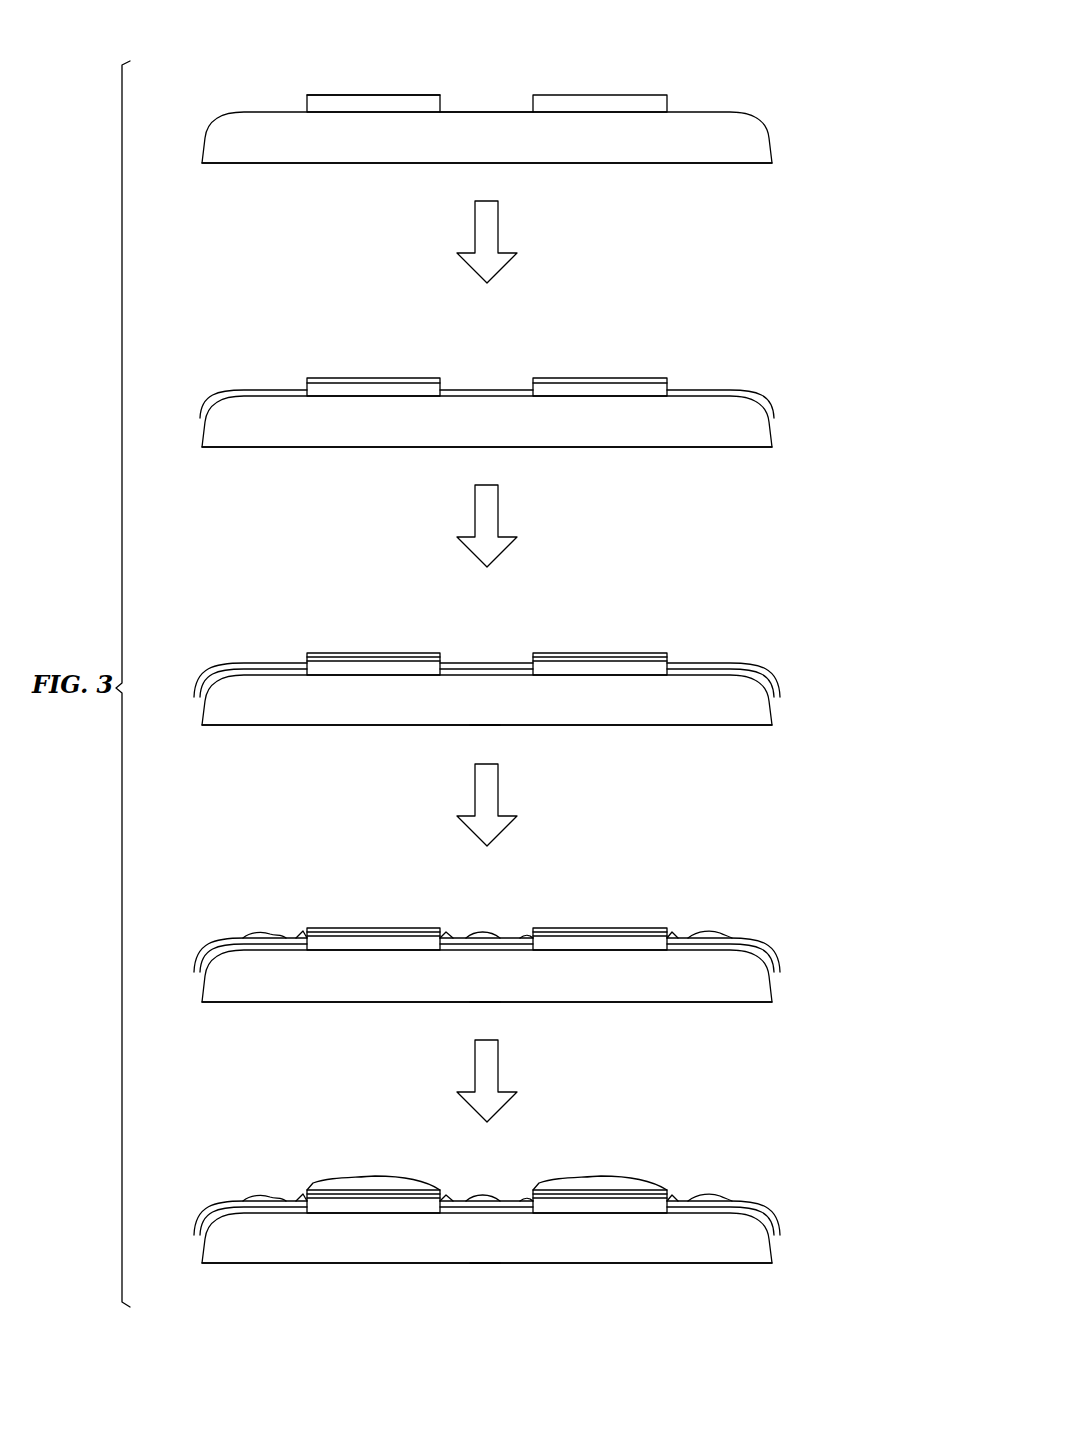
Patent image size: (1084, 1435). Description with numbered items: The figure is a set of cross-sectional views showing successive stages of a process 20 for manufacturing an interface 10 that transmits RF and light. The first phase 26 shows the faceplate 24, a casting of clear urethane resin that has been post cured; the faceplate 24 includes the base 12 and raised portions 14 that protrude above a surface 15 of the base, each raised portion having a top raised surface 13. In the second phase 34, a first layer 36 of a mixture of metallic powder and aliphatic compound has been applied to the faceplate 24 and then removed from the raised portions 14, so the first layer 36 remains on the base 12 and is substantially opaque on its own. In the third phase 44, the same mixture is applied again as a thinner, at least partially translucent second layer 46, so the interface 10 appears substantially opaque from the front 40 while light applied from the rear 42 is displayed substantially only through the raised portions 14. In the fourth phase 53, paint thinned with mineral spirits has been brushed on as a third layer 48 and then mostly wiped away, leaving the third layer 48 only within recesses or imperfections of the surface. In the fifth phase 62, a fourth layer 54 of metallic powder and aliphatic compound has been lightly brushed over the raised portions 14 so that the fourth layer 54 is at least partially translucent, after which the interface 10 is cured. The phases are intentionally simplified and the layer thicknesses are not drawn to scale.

The interface 10 is at (766, 82).
The base 12 is at (246, 145).
The top raised surface 13 is at (386, 94).
The raised portions 14 is at (362, 105).
The surface 15 is at (491, 112).
The process 20 is at (768, 40).
The faceplate 24 is at (651, 165).
The first phase 26 is at (190, 86).
The second phase 34 is at (190, 368).
The first layer 36 is at (276, 390).
The front 40 is at (560, 589).
The rear 42 is at (481, 733).
The third phase 44 is at (190, 651).
The second layer 46 is at (284, 662).
The third layer 48 is at (246, 936).
The fourth phase 53 is at (190, 925).
The fourth layer 54 is at (362, 1181).
The fifth phase 62 is at (190, 1186).